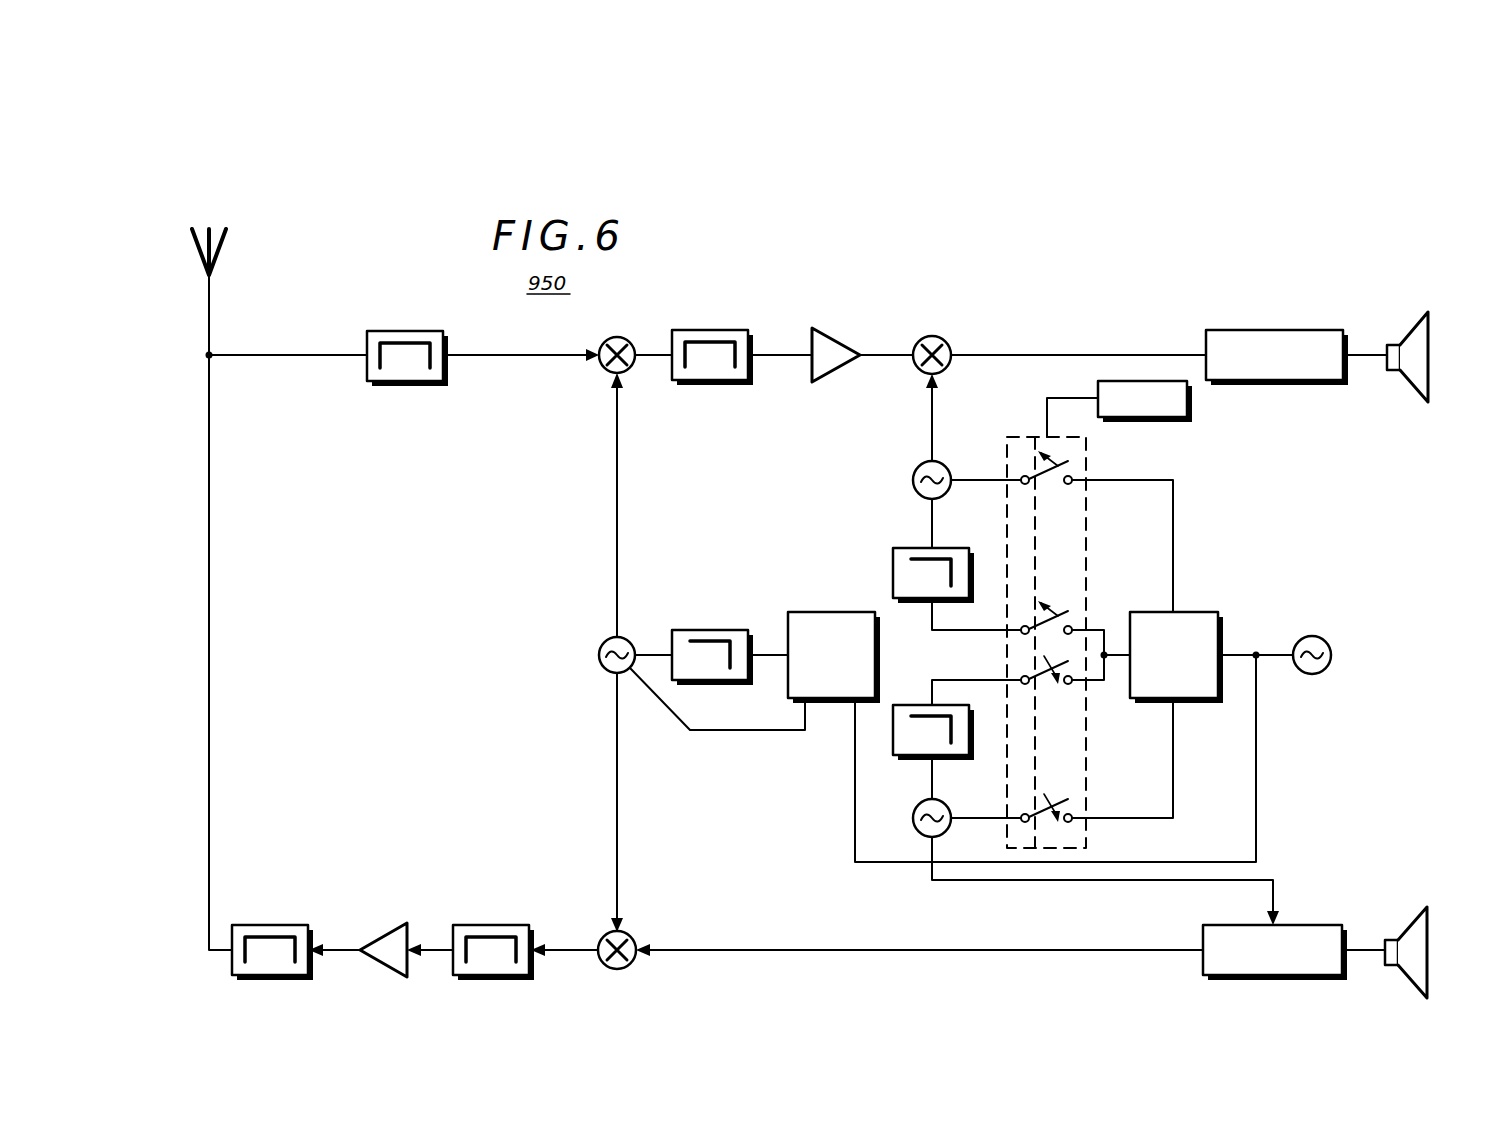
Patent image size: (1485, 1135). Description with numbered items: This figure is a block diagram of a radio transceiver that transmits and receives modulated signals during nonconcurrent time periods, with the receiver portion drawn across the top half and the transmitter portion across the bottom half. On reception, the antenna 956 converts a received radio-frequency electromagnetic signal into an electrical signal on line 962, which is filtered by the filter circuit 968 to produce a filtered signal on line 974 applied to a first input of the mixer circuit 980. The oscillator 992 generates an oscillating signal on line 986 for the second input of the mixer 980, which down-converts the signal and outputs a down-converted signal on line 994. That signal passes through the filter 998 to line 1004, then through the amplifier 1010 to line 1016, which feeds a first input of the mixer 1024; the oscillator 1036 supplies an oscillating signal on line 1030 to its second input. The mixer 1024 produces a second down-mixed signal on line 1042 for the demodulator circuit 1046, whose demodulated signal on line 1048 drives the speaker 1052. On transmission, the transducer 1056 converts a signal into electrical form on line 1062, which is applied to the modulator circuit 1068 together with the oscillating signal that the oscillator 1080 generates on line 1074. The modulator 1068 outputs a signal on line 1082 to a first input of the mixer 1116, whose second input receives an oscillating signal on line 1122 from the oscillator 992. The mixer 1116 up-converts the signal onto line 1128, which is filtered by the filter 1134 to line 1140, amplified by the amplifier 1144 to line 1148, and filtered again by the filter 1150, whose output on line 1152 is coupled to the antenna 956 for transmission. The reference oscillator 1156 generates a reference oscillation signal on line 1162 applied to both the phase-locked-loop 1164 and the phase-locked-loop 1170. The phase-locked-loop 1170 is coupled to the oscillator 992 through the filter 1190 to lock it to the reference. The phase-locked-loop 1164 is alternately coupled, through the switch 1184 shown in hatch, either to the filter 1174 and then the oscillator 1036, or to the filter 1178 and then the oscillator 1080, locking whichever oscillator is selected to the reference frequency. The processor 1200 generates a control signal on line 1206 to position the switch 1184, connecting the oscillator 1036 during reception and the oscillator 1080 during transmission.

The antenna 956 is at (232, 238).
The line 962 is at (211, 318).
The filter circuit 968 is at (401, 331).
The line 974 is at (465, 355).
The mixer circuit 980 is at (613, 337).
The line 986 is at (619, 487).
The oscillator 992 is at (599, 652).
The line 994 is at (649, 355).
The filter 998 is at (708, 330).
The line 1004 is at (781, 355).
The amplifier 1010 is at (830, 340).
The line 1016 is at (880, 355).
The mixer circuit 1024 is at (936, 337).
The line 1030 is at (932, 446).
The oscillator 1036 is at (913, 481).
The line 1042 is at (1059, 355).
The demodulator circuit 1046 is at (1284, 316).
The line 1048 is at (1372, 355).
The speaker 1052 is at (1408, 396).
The transducer 1056 is at (1406, 992).
The line 1062 is at (1367, 950).
The modulator circuit 1068 is at (1203, 978).
The line 1074 is at (1092, 880).
The oscillator 1080 is at (915, 812).
The line 1082 is at (919, 933).
The mixer 1116 is at (618, 972).
The line 1122 is at (619, 889).
The line 1128 is at (568, 956).
The filter 1134 is at (486, 925).
The line 1140 is at (428, 940).
The amplifier 1144 is at (381, 975).
The line 1148 is at (336, 950).
The filter 1150 is at (265, 925).
The line 1152 is at (210, 811).
The reference oscillator 1156 is at (1325, 670).
The line 1162 is at (1256, 652).
The phase-locked-loop circuit 1164 is at (1194, 612).
The phase-locked-loop circuit 1170 is at (831, 612).
The filter 1174 is at (893, 576).
The filter 1178 is at (945, 760).
The switch 1184 is at (1087, 556).
The filter 1190 is at (703, 630).
The processor 1200 is at (1150, 420).
The line 1206 is at (1047, 398).